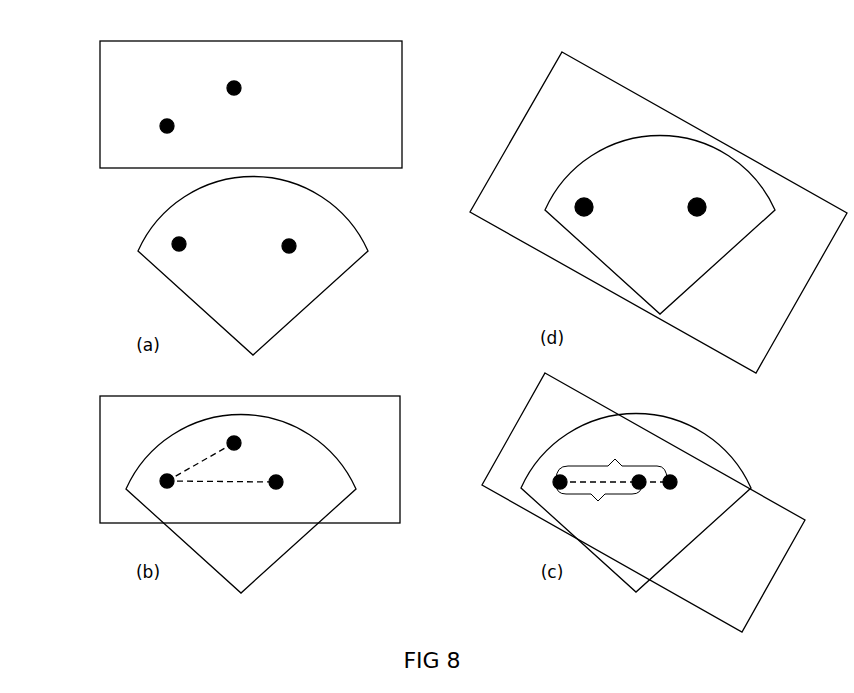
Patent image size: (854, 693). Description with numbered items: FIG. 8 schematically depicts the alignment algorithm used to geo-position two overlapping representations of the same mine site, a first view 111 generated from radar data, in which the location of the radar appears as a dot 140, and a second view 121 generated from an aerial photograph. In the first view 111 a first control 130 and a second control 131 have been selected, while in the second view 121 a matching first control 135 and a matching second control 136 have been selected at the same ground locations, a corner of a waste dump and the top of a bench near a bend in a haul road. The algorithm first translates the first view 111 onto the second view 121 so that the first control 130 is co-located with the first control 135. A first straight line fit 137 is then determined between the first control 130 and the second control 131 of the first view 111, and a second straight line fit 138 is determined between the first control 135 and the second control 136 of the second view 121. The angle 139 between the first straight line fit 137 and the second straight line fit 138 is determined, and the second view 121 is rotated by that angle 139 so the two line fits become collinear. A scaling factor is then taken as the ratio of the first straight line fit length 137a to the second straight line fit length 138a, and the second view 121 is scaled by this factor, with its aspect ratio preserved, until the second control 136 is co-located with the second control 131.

The first view 111 is at (456, 245).
The second view 121 is at (375, 69).
The first control 130 is at (172, 244).
The second control 131 is at (297, 242).
The first control 135 is at (160, 126).
The second control 136 is at (232, 81).
The first straight line fit 137 is at (220, 481).
The second straight line fit 138 is at (197, 461).
The angle 139 is at (208, 472).
The dot 140 is at (258, 354).
The first straight line fit length 137a is at (617, 462).
The second straight line fit length 138a is at (599, 501).